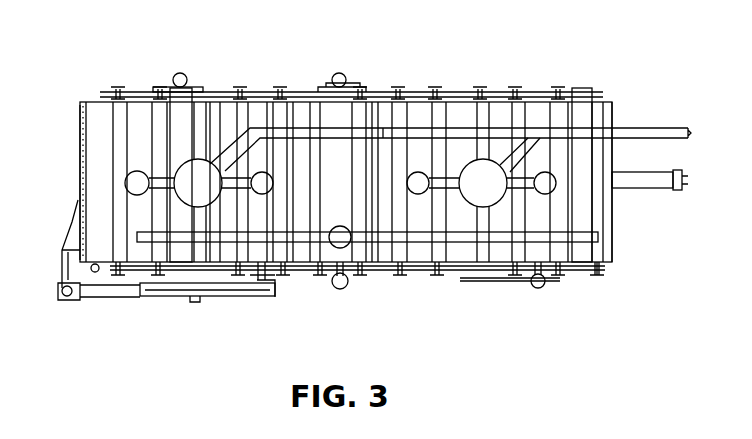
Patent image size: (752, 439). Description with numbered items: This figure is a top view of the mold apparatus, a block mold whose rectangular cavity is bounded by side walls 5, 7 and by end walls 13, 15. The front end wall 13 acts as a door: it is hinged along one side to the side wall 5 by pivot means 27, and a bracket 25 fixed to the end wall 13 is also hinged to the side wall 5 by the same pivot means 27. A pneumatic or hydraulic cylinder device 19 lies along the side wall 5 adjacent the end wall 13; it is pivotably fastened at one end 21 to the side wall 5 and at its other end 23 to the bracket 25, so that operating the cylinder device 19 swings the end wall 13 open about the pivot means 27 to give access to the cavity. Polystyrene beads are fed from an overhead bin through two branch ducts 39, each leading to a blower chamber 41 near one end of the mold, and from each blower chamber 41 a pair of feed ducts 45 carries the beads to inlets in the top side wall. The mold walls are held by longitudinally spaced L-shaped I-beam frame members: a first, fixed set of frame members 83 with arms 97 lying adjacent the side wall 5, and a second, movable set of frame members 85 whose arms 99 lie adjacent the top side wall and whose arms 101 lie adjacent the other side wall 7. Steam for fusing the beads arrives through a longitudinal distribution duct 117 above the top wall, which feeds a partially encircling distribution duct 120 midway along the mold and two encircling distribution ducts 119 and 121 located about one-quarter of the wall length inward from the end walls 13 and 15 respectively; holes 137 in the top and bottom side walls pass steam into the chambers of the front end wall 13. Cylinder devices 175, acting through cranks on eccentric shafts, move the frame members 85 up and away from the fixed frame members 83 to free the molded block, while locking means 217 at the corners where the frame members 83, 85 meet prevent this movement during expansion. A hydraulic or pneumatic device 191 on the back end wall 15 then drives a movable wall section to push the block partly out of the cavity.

The side wall 5 is at (419, 264).
The side wall 7 is at (418, 101).
The end wall 13 is at (80, 134).
The end wall 15 is at (612, 248).
The cylinder device 19 is at (170, 300).
The one end of cylinder device 21 is at (273, 290).
The other end of cylinder device 23 is at (62, 300).
The bracket 25 is at (72, 250).
The pivot means 27 is at (100, 276).
The branch duct 39 is at (383, 125).
The blower chamber 41 is at (203, 160).
The feed duct 45 is at (229, 191).
The first set of exterior frame members 83 is at (477, 285).
The second set of exterior frame members 85 is at (118, 88).
The arm of frame member 97 is at (597, 284).
The arm of frame member 99 is at (114, 114).
The arm of frame member 101 is at (284, 92).
The longitudinal distribution duct 117 is at (304, 230).
The encircling distribution duct 119 is at (170, 131).
The partially encircling distribution duct 120 is at (380, 127).
The encircling distribution duct 121 is at (569, 112).
The holes 137 is at (83, 162).
The cylinder device 175 is at (344, 75).
The hydraulic or pneumatic device 191 is at (637, 192).
The locking means 217 is at (540, 289).